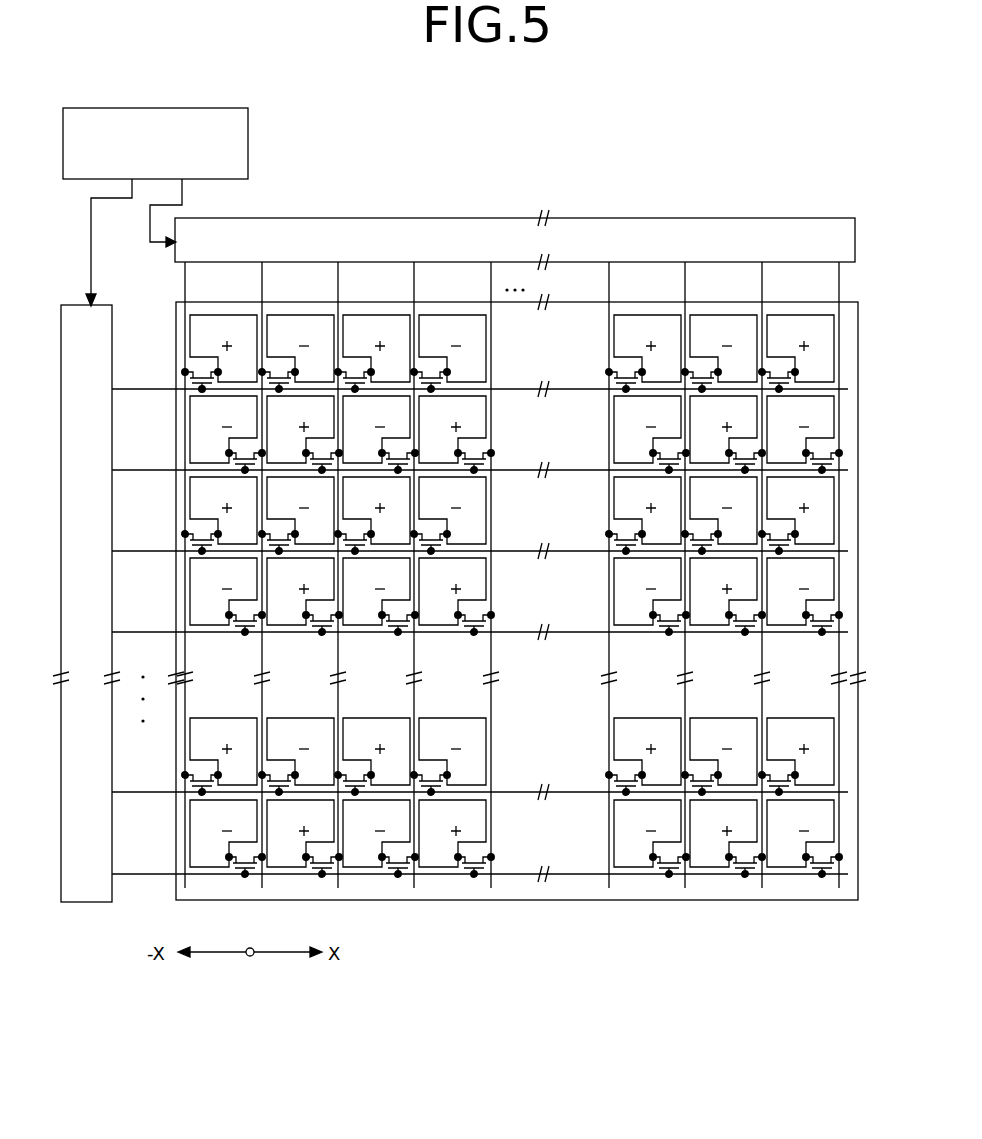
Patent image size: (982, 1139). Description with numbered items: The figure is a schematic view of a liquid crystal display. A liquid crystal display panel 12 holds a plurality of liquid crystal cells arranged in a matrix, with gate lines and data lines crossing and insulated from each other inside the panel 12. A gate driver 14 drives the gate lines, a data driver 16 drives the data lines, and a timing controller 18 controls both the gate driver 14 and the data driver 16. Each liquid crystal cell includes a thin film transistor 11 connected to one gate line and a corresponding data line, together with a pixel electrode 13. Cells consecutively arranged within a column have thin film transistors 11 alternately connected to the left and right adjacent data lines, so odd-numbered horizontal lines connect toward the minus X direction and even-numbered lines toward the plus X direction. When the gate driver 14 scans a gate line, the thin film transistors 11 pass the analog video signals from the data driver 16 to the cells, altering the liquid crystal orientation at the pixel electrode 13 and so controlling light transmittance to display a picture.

The timing controller 18 is at (249, 122).
The data driver 16 is at (596, 218).
The gate driver 14 is at (100, 896).
The liquid crystal display panel 12 is at (510, 581).
The pixel electrode 13 is at (196, 352).
The thin film transistor 11 is at (178, 383).